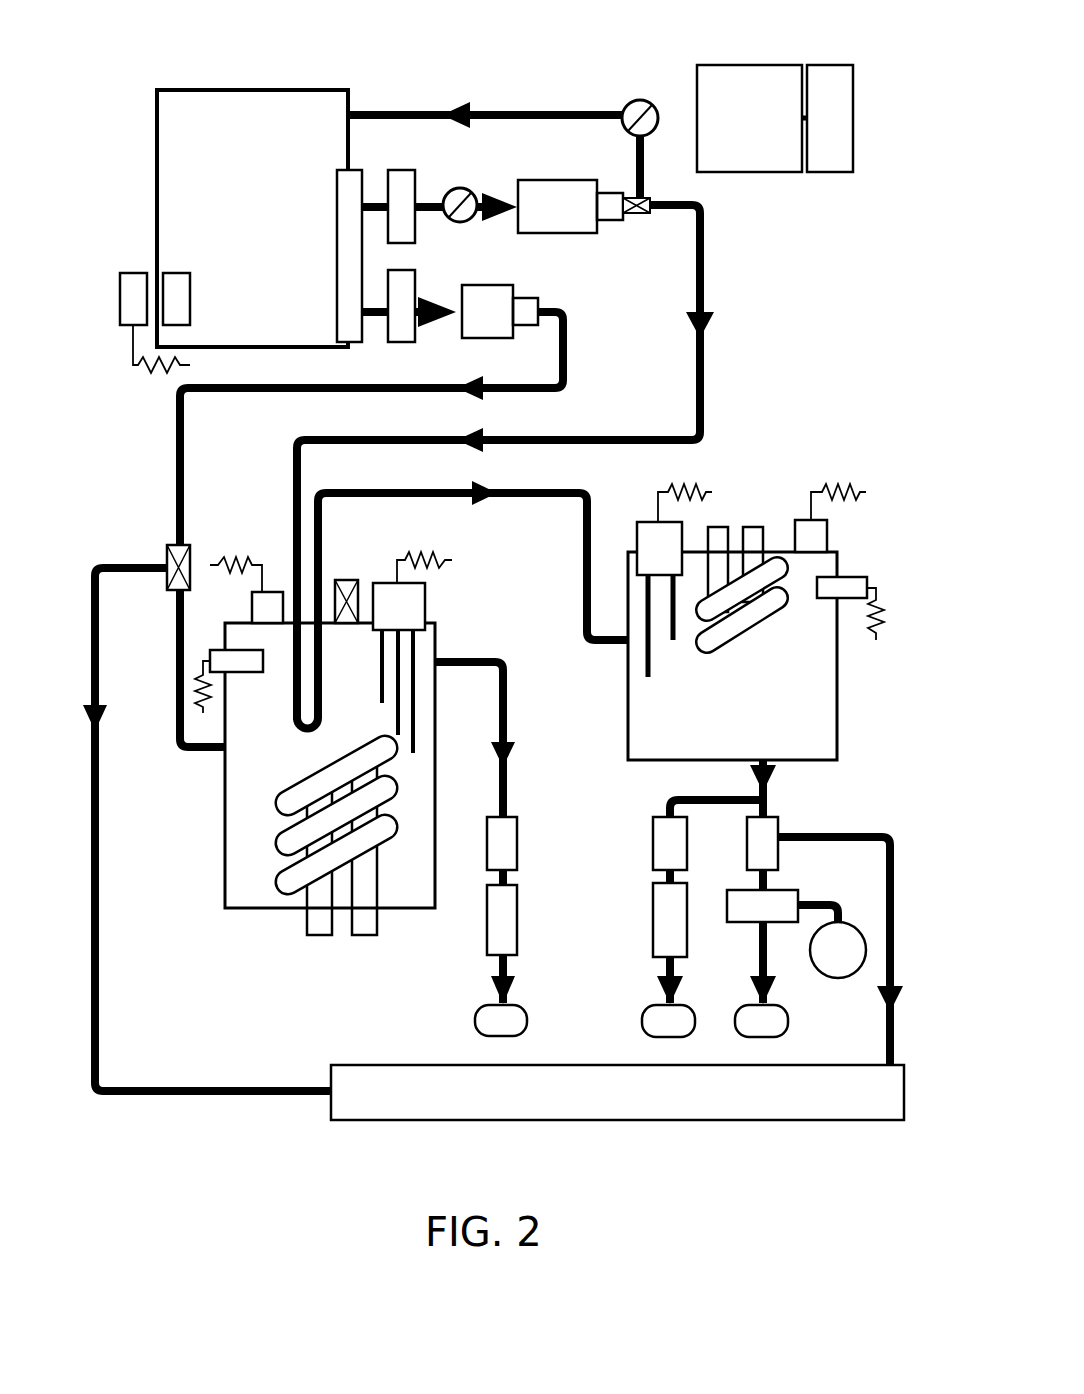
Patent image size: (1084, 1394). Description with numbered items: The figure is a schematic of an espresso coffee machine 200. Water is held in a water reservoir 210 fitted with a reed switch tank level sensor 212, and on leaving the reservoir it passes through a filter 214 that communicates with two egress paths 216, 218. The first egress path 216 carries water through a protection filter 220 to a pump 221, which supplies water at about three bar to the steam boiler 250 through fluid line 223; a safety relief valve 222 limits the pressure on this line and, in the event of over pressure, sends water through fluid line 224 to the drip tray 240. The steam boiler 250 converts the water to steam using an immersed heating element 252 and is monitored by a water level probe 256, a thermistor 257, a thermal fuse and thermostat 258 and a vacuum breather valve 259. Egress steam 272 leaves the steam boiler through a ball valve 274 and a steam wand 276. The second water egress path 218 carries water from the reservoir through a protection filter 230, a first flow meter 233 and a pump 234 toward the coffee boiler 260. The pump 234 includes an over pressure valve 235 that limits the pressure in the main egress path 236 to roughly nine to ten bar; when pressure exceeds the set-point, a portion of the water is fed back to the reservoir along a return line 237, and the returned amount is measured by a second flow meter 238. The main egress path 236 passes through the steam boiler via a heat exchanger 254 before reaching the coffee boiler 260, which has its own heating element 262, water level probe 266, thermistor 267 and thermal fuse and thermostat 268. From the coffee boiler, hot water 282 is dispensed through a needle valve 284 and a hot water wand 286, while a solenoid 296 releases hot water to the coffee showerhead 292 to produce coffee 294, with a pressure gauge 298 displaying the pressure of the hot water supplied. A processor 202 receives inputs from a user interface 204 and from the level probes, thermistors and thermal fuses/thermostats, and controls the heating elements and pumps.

The espresso coffee machine 200 is at (220, 44).
The processor 202 is at (770, 96).
The user interface 204 is at (854, 96).
The water reservoir 210 is at (274, 122).
The reed switch tank level sensor 212 is at (150, 262).
The filter 214 is at (345, 225).
The first egress path 216 is at (375, 305).
The second water egress path 218 is at (375, 200).
The protection filter 220 is at (400, 290).
The pump 221 is at (492, 290).
The safety relief valve 222 is at (167, 548).
The fluid line 223 is at (172, 733).
The fluid line 224 is at (127, 565).
The protection filter 230 is at (400, 180).
The first flow meter 233 is at (460, 195).
The pump 234 is at (540, 190).
The over pressure valve 235 is at (630, 214).
The main egress path 236 is at (705, 280).
The return line 237 is at (530, 110).
The second flow meter 238 is at (640, 104).
The drip tray 240 is at (404, 1096).
The steam boiler 250 is at (277, 782).
The heating element 252 is at (305, 872).
The heat exchanger 254 is at (298, 729).
The water level probe 256 is at (385, 615).
The thermistor 257 is at (215, 655).
The thermal fuse and thermostat 258 is at (272, 600).
The vacuum breather valve 259 is at (345, 600).
The coffee boiler 260 is at (687, 729).
The heating element 262 is at (755, 575).
The water level probe 266 is at (648, 540).
The thermistor 267 is at (845, 580).
The thermal fuse and thermostat 268 is at (805, 535).
The egress steam 272 is at (505, 1030).
The ball valve 274 is at (507, 848).
The steam wand 276 is at (501, 935).
The hot water 282 is at (668, 1018).
The needle valve 284 is at (660, 848).
The hot water wand 286 is at (665, 935).
The coffee showerhead 292 is at (762, 900).
The coffee 294 is at (762, 1020).
The solenoid 296 is at (760, 842).
The pressure gauge 298 is at (840, 940).